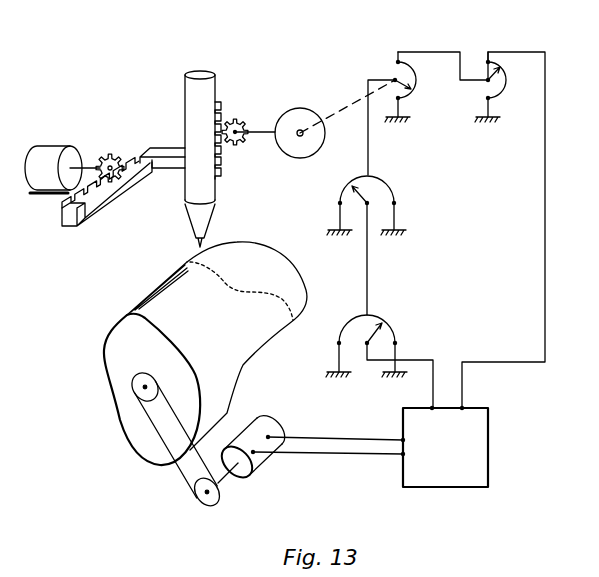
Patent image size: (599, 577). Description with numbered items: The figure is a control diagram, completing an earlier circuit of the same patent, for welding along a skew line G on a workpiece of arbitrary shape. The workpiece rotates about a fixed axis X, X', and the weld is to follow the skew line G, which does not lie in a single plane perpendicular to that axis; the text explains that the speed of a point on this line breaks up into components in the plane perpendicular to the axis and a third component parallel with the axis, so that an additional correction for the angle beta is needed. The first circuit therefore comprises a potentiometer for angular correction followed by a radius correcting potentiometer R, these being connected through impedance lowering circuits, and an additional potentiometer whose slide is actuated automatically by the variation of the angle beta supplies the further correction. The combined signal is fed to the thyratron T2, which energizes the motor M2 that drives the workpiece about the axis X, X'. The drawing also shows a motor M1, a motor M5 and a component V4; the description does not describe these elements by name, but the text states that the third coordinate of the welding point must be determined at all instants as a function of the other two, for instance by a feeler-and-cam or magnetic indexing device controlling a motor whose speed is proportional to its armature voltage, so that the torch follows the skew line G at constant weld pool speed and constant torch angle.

The motor driving the rack M5 is at (53, 157).
The motor driving the tool cylinder gear M1 is at (295, 117).
The radius correcting potentiometer R is at (408, 87).
The potentiometer V4 is at (503, 87).
The thyratron T2 is at (444, 446).
The fixed axis X' is at (210, 348).
The skew line G is at (238, 292).
The fixed axis X is at (151, 439).
The motor M2 is at (258, 467).